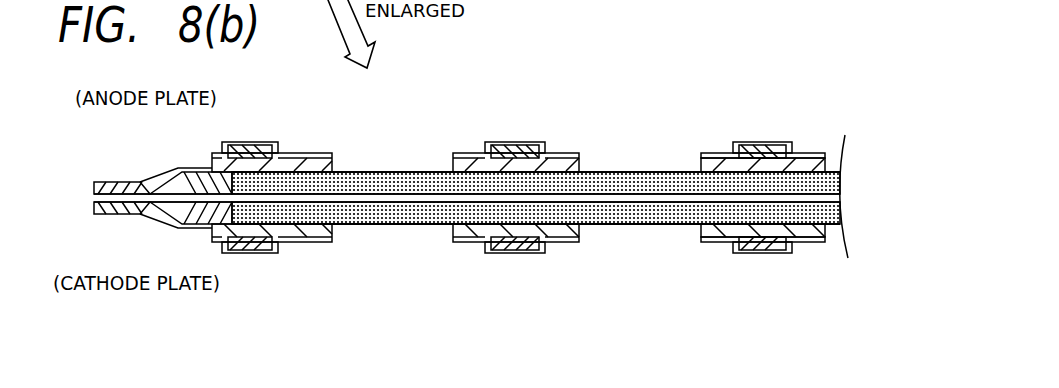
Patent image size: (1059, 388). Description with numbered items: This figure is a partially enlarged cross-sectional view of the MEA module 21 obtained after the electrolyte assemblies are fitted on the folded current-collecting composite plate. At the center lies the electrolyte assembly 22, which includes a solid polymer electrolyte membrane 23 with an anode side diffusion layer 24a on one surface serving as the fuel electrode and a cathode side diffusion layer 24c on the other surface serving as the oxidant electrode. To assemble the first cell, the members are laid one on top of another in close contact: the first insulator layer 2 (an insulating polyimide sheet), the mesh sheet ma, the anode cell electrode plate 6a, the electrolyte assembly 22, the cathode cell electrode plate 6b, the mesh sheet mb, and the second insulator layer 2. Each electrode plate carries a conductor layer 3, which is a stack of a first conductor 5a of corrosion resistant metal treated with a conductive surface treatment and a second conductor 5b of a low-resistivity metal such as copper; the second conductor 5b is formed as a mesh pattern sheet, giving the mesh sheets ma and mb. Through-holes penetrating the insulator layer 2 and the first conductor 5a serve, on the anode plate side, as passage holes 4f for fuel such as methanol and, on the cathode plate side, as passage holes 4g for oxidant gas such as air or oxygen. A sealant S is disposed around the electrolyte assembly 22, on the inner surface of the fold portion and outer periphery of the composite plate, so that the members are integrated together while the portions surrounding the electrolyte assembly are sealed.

The insulator layer 2 is at (131, 191).
The sealant S is at (188, 184).
The mesh sheet ma is at (258, 140).
The mesh sheet mb is at (258, 260).
The cell electrode plate 6a is at (304, 152).
The cell electrode plate 6b is at (308, 252).
The passage holes for fuel 4f is at (404, 165).
The passage holes for oxidant gas 4g is at (409, 228).
The anode side diffusion layer 24a is at (611, 178).
The cathode side diffusion layer 24c is at (617, 215).
The solid polymer electrolyte membrane 23 is at (666, 198).
The electrolyte assembly 22 is at (503, 203).
The MEA module 21 is at (786, 145).
The conductor layer 3 is at (749, 145).
The first conductor 5a is at (725, 158).
The second conductor 5b is at (750, 156).